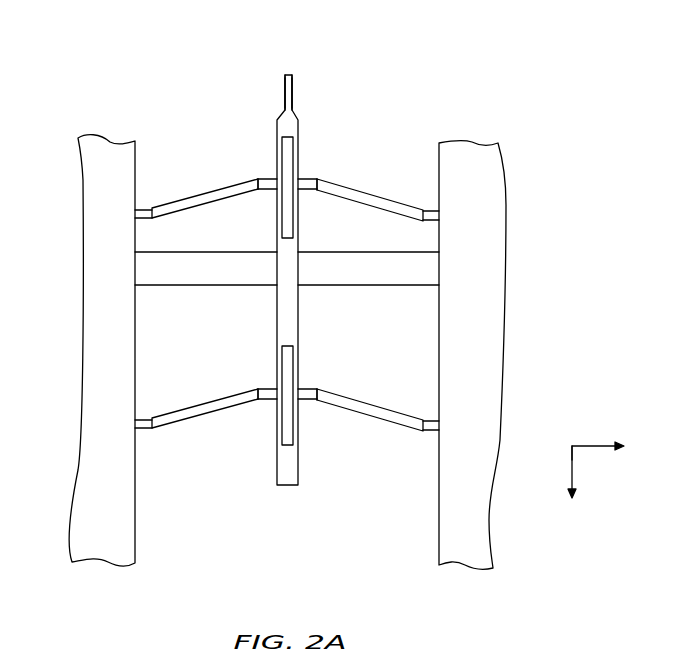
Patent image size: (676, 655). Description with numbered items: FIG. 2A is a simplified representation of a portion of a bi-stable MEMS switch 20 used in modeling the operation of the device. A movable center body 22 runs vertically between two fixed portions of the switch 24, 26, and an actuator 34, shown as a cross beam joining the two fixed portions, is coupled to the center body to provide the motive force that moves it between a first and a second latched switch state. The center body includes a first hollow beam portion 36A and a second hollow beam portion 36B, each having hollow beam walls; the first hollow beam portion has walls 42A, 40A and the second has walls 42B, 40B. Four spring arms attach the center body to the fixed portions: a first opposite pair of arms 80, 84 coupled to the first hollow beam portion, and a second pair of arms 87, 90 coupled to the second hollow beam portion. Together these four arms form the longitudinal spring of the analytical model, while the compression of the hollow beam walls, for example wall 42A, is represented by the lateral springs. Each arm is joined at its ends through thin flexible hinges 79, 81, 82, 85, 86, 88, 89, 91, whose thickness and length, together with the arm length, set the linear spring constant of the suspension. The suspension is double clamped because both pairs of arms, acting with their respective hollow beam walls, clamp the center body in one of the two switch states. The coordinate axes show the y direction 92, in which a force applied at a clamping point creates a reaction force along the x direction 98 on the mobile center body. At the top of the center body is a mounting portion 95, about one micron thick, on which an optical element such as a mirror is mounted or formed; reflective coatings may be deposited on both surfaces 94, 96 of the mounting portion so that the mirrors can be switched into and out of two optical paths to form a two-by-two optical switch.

The bi-stable MEMS switch 20 is at (527, 131).
The movable center body 22 is at (298, 470).
The fixed portion of the switch 24 is at (80, 248).
The fixed portion of the switch 26 is at (502, 252).
The actuator 34 is at (365, 285).
The first hollow beam portion 36A is at (289, 141).
The second hollow beam portion 36B is at (289, 349).
The hollow beam wall 40A is at (304, 182).
The hollow beam wall 40B is at (304, 392).
The hollow beam wall 42A is at (274, 180).
The hollow beam wall 42B is at (274, 390).
The flexible hinge 79 is at (142, 222).
The spring arm 80 is at (188, 200).
The flexible hinge 81 is at (268, 193).
The flexible hinge 82 is at (306, 193).
The spring arm 84 is at (386, 202).
The flexible hinge 85 is at (425, 222).
The flexible hinge 86 is at (142, 432).
The spring arm 87 is at (188, 410).
The flexible hinge 88 is at (268, 403).
The flexible hinge 89 is at (306, 403).
The spring arm 90 is at (386, 412).
The flexible hinge 91 is at (425, 432).
The y direction 92 is at (595, 444).
The surface of the mounting portion 94 is at (285, 88).
The mounting portion 95 is at (288, 74).
The surface of the mounting portion 96 is at (292, 88).
The x direction 98 is at (573, 462).